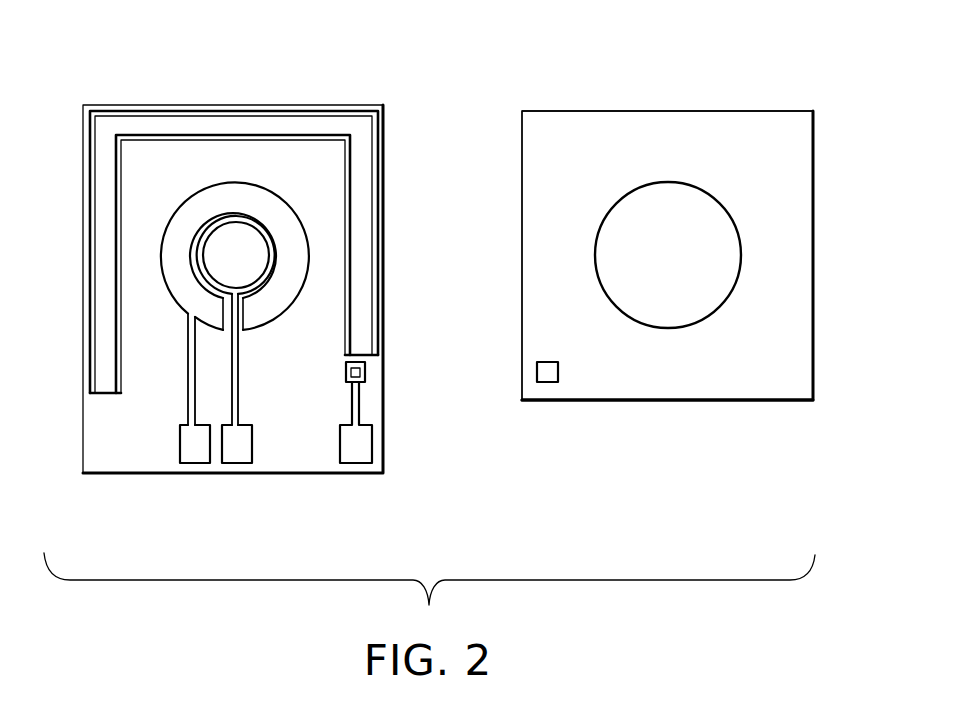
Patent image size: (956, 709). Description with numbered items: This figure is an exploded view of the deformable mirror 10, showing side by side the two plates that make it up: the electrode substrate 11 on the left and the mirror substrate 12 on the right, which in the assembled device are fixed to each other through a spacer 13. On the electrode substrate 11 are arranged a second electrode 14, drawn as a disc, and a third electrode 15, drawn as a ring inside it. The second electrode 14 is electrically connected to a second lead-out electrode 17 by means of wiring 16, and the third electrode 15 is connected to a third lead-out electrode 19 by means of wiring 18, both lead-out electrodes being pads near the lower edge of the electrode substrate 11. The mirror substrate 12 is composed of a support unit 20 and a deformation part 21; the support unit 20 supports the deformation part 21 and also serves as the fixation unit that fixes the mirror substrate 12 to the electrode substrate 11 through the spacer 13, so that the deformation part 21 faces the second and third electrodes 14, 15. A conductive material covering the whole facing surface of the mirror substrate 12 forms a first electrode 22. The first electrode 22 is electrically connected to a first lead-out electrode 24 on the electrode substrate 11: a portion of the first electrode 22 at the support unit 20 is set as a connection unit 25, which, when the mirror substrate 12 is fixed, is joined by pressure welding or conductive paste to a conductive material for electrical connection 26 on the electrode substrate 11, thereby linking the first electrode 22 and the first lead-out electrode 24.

The deformable mirror 10 is at (389, 549).
The electrode substrate 11 is at (385, 161).
The mirror substrate 12 is at (570, 109).
The spacer 13 is at (360, 205).
The second electrode 14 is at (250, 193).
The third electrode 15 is at (227, 235).
The wiring 16 is at (188, 396).
The second lead-out electrode 17 is at (193, 456).
The wiring 18 is at (237, 407).
The third lead-out electrode 19 is at (235, 456).
The support unit 20 is at (760, 140).
The deformation part 21 is at (677, 203).
The first electrode 22 is at (673, 390).
The first lead-out electrode 24 is at (363, 447).
The connection unit 25 is at (545, 384).
The conductive material for electrical connection 26 is at (366, 370).